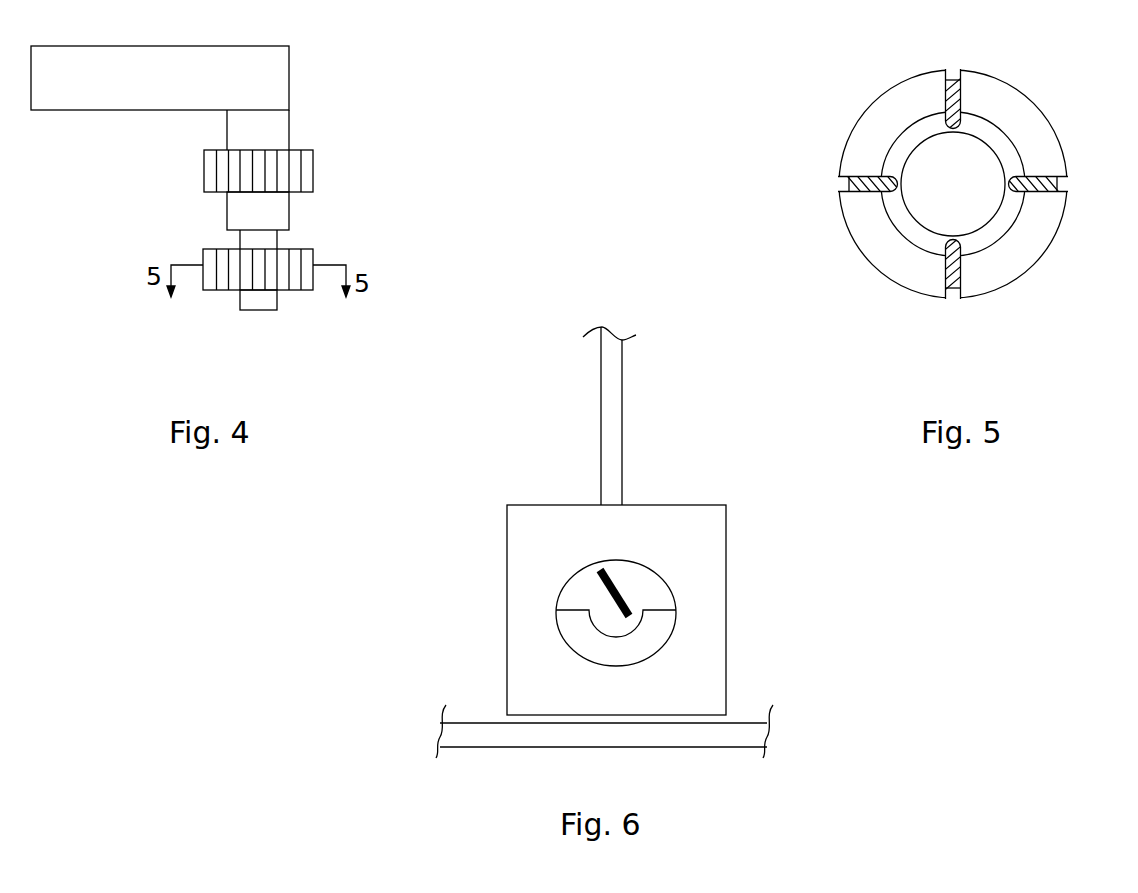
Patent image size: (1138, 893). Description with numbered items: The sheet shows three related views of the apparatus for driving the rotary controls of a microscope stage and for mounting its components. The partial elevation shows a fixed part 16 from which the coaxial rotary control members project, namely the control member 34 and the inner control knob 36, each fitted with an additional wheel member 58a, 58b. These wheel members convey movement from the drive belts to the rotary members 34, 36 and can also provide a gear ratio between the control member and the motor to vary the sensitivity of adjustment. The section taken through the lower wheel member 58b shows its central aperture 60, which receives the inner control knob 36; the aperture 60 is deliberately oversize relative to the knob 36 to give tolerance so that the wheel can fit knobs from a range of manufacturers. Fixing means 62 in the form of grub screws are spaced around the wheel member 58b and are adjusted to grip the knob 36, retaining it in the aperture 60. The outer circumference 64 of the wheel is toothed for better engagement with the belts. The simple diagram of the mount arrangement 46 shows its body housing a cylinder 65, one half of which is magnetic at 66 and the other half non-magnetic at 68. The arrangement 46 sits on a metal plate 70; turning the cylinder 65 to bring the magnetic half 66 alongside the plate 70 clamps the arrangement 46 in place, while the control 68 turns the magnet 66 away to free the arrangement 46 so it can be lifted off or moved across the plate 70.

In FIG. 4, the arm 16 is at (291, 83).
In FIG. 4, the wheel member 58a is at (313, 167).
In FIG. 4, the control member 34 is at (226, 206).
In FIG. 4, the wheel member 58b is at (295, 293).
In FIG. 5, the wheel member 58b is at (877, 122).
In FIG. 4, the inner control knob 36 is at (255, 305).
In FIG. 5, the inner control knob 36 is at (970, 198).
In FIG. 5, the central aperture 60 is at (915, 236).
In FIG. 5, the fixing means 62 is at (950, 68).
In FIG. 5, the outer circumference 64 is at (1052, 255).
In FIG. 6, the mount arrangement 46 is at (697, 505).
In FIG. 6, the cylinder 65 is at (682, 609).
In FIG. 6, the magnetic half 66 is at (640, 645).
In FIG. 6, the non-magnetic half 68 is at (590, 592).
In FIG. 6, the metal plate 70 is at (542, 738).